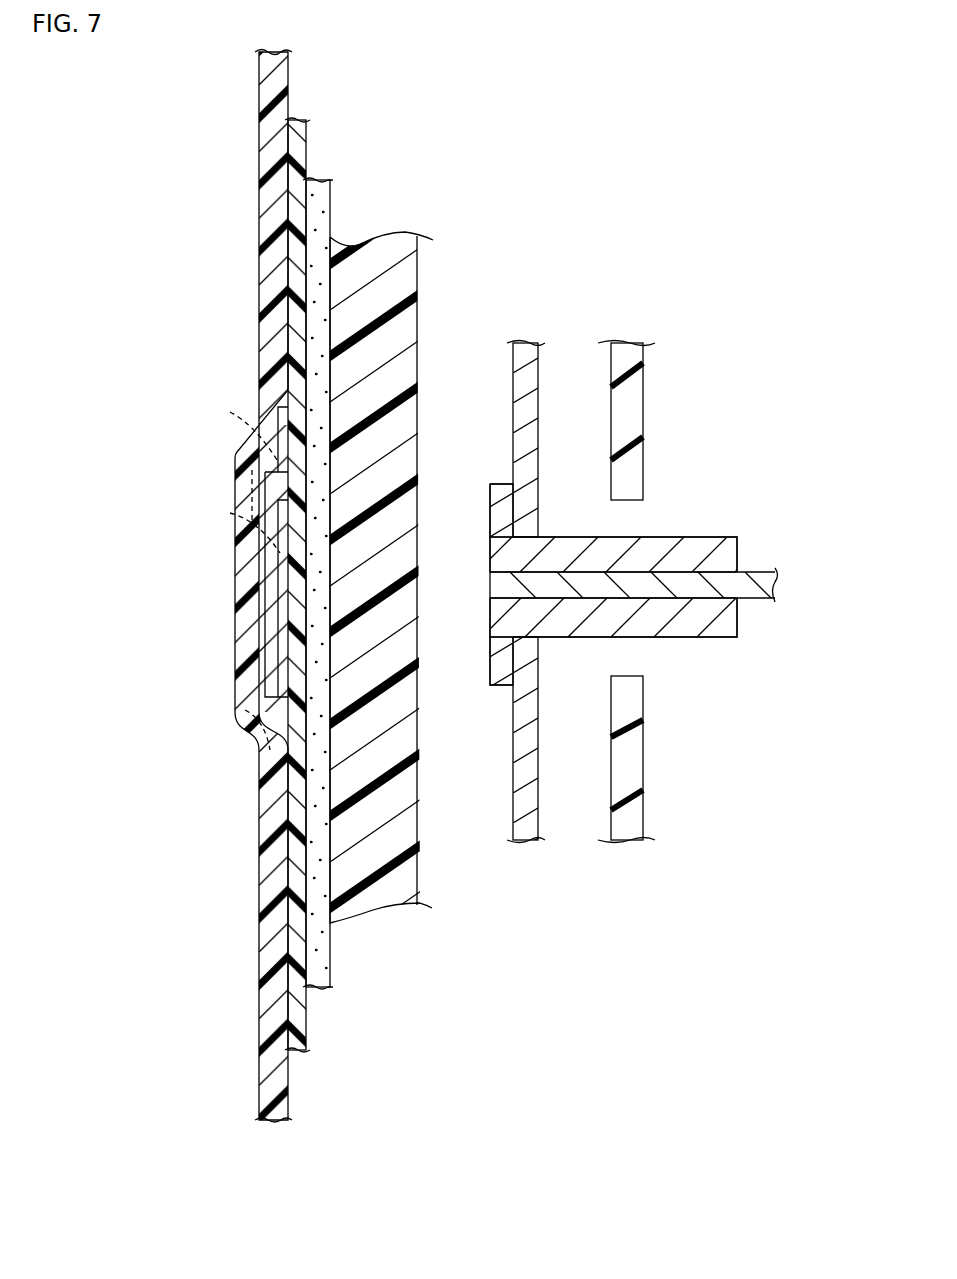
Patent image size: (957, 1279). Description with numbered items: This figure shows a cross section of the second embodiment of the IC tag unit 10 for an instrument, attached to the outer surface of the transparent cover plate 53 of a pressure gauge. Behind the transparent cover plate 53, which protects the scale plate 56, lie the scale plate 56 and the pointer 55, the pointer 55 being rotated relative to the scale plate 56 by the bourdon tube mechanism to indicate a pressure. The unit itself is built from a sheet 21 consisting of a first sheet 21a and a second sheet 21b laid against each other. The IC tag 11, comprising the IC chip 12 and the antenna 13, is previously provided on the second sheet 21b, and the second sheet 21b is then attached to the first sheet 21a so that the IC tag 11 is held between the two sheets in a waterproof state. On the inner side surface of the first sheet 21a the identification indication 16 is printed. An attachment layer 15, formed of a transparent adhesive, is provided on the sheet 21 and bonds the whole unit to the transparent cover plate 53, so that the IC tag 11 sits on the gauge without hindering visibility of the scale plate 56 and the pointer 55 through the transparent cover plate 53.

The IC tag unit 10 is at (250, 116).
The IC tag 11 is at (140, 375).
The IC chip 12 is at (268, 432).
The antenna 13 is at (262, 545).
The attachment layer 15 is at (330, 967).
The identification indication 16 is at (235, 685).
The sheet 21 is at (407, 1078).
The first sheet 21a is at (288, 1097).
The second sheet 21b is at (307, 1020).
The transparent cover plate 53 is at (373, 912).
The pointer 55 is at (520, 343).
The scale plate 56 is at (645, 415).